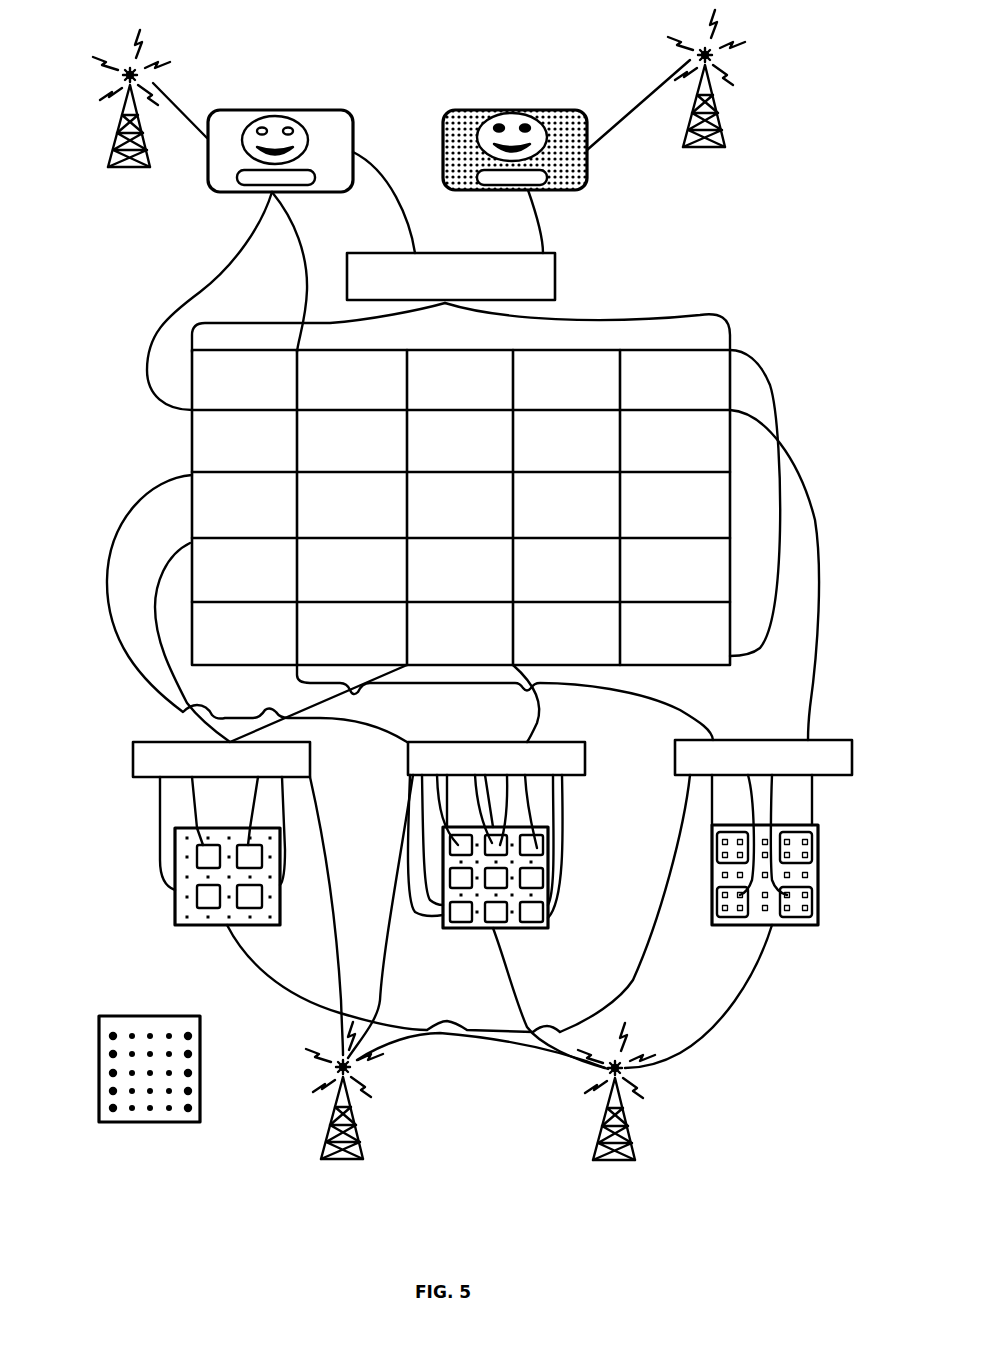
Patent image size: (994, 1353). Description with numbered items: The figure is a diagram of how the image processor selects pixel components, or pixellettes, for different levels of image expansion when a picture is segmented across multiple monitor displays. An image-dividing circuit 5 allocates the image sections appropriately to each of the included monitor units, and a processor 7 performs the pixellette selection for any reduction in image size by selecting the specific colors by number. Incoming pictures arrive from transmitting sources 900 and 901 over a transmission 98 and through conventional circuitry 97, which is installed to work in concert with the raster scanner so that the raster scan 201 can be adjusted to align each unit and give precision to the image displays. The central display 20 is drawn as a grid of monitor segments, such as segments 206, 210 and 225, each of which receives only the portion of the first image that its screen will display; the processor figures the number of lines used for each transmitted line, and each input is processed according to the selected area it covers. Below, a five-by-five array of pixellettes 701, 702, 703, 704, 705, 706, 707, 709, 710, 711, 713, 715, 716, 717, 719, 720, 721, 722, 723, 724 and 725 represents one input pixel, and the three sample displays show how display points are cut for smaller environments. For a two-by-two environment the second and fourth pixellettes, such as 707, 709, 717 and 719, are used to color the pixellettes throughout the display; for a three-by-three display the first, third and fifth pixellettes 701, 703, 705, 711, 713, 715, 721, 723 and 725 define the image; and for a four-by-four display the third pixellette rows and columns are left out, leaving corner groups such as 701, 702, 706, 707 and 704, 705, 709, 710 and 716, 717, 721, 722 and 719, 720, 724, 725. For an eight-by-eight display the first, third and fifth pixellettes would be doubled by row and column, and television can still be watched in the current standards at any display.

The image-dividing circuit 5 is at (535, 277).
The processor 7 is at (177, 903).
The program memory matrix 20 is at (217, 528).
The conventional circuitry 97 is at (641, 98).
The first transmission link 98 is at (181, 107).
The raster scan 201 is at (205, 393).
The memory cell 206 is at (207, 457).
The memory cell 210 is at (697, 450).
The memory cell 225 is at (690, 645).
The key 701 is at (458, 845).
The key 702 is at (651, 848).
The key 703 is at (493, 843).
The key 704 is at (797, 848).
The key 705 is at (530, 845).
The key 706 is at (64, 1045).
The key 707 is at (208, 858).
The key 709 is at (247, 857).
The key 710 is at (188, 1054).
The key 711 is at (458, 878).
The key 713 is at (497, 880).
The key 715 is at (532, 880).
The key 716 is at (737, 912).
The key 717 is at (208, 895).
The key 719 is at (247, 897).
The key 720 is at (188, 1091).
The key 721 is at (460, 913).
The key 722 is at (701, 1003).
The key 723 is at (497, 913).
The key 724 is at (836, 985).
The key 725 is at (532, 912).
The transmitter tower 900 is at (700, 42).
The transmitter tower 901 is at (125, 56).